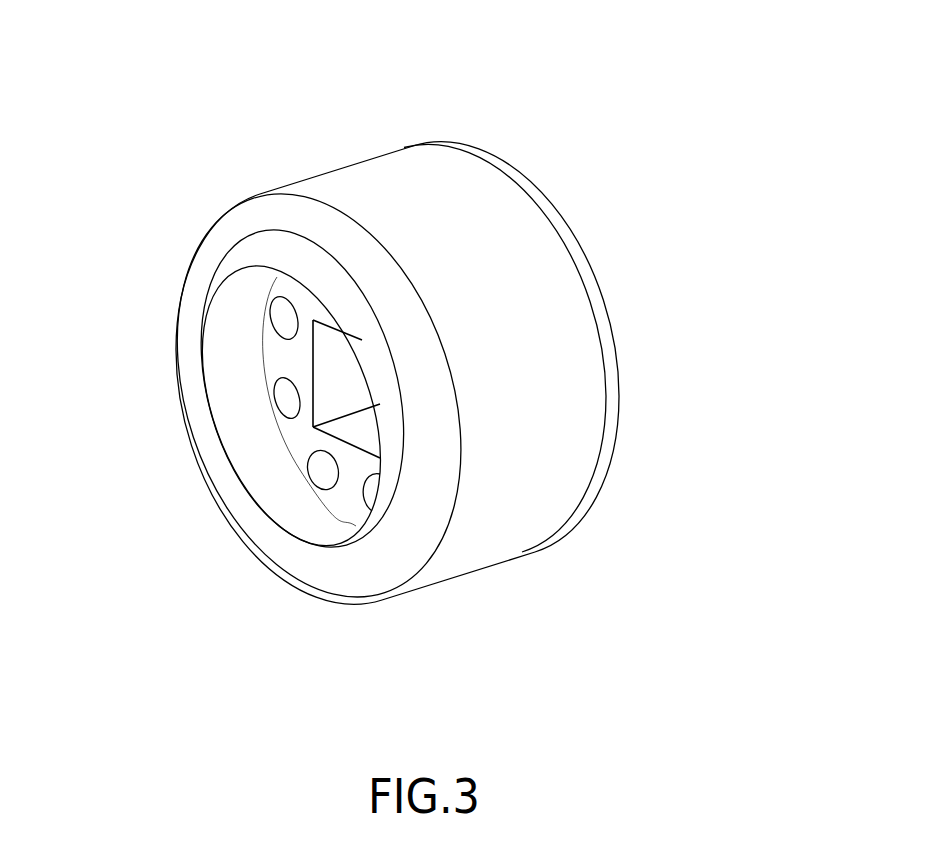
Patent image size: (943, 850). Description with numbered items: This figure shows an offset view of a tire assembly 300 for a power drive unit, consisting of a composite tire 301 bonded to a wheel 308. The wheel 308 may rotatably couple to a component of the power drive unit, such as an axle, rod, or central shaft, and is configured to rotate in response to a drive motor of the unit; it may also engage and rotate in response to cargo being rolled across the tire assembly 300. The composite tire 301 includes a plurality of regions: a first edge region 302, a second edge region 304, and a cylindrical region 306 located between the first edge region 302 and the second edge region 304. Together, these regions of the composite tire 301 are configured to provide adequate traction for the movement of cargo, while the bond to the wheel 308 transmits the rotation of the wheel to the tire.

The tire assembly 300 is at (428, 98).
The composite tire 301 is at (453, 605).
The first edge region 302 is at (270, 203).
The second edge region 304 is at (586, 246).
The cylindrical region 306 is at (533, 442).
The wheel 308 is at (203, 438).